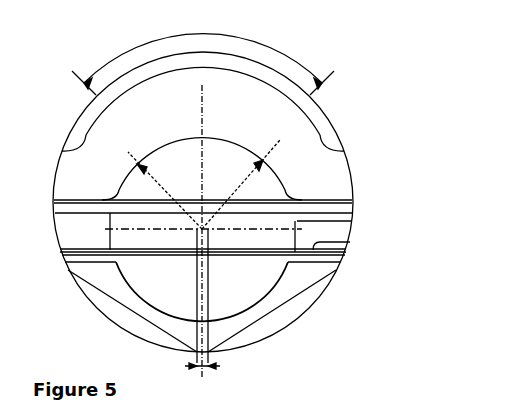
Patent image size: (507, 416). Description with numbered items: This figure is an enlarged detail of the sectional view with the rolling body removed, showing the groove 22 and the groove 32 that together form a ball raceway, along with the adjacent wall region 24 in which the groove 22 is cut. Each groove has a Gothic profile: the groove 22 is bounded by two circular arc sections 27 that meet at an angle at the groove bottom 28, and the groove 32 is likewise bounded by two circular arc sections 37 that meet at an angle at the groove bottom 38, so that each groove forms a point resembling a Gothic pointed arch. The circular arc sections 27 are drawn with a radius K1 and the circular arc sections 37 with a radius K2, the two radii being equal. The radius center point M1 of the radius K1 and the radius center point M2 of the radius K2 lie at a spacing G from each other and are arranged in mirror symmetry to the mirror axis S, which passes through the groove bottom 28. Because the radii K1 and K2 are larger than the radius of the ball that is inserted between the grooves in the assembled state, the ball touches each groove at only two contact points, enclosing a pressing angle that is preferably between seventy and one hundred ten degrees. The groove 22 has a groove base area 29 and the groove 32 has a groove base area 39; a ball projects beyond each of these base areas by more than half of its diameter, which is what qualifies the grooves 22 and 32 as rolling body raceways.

The groove 22 is at (181, 142).
The mirror axis S is at (203, 137).
The groove bottom 28 is at (210, 138).
The ring zone wall 24 is at (283, 97).
The circular arc sections 27 is at (152, 150).
The radius K1 is at (138, 168).
The radius K2 is at (265, 170).
The radius center point M2 is at (55, 201).
The groove base area 29 is at (353, 213).
The groove base area 39 is at (349, 242).
The radius center point M1 is at (312, 261).
The groove 32 is at (265, 287).
The circular arc sections 37 is at (140, 296).
The groove bottom 38 is at (210, 322).
The spacing G is at (202, 379).